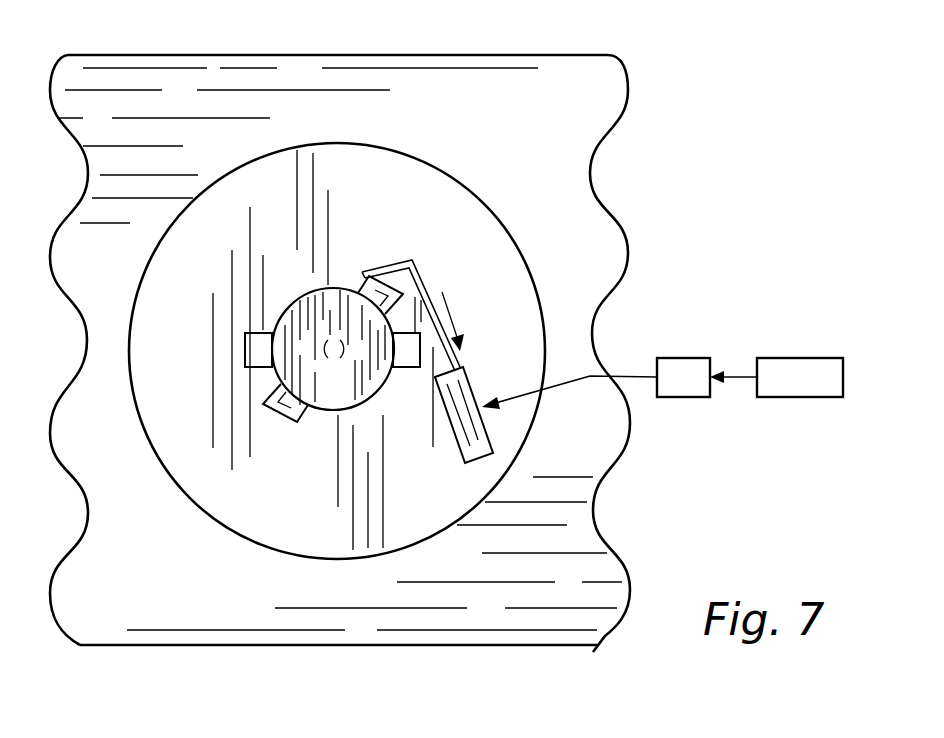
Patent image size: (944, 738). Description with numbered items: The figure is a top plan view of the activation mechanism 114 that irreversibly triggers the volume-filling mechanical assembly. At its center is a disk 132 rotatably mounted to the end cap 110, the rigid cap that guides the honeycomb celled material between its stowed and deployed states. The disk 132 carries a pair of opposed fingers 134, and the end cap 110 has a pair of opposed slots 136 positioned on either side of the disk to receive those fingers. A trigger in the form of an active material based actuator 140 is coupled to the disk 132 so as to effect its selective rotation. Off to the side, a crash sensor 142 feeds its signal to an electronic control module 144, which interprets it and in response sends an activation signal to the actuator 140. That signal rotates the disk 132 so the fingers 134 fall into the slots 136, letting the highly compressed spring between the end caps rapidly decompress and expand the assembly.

The end cap 110 is at (583, 117).
The activation mechanism 114 is at (183, 372).
The disk 132 is at (305, 298).
The fingers 134 is at (418, 264).
The slots 136 is at (260, 350).
The active material based actuator 140 is at (478, 440).
The crash sensor 142 is at (796, 358).
The electronic control module 144 is at (685, 358).